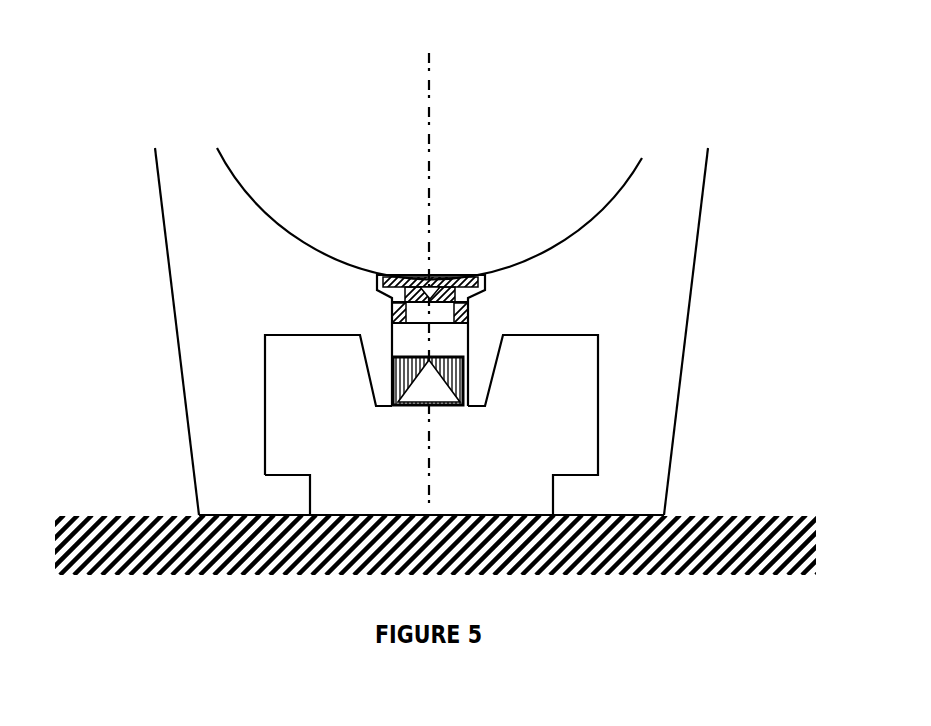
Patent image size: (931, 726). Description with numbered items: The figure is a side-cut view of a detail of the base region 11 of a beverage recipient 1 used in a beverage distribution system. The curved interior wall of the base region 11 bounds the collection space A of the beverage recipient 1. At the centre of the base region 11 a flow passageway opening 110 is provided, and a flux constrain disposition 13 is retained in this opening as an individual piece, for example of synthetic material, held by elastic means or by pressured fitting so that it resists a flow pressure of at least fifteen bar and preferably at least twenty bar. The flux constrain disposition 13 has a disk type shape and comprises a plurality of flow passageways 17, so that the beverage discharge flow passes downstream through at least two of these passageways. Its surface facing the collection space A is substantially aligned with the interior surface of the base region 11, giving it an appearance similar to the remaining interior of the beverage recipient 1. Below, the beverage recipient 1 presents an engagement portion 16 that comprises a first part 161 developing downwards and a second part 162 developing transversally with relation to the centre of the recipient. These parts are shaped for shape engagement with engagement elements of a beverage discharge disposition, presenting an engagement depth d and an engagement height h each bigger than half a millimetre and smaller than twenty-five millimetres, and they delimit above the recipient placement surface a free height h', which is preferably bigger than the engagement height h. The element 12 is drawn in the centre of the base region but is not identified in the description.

The beverage recipient 1 is at (413, 290).
The collection space A is at (525, 121).
The base region 11 is at (429, 219).
The sensor element 12 is at (429, 370).
The flux constrain disposition 13 is at (434, 329).
The engagement portion 16 is at (395, 469).
The flow passageways 17 is at (434, 292).
The flow passageway opening 110 is at (449, 315).
The first part 161 is at (294, 405).
The second part 162 is at (284, 495).
The engagement depth d is at (353, 467).
The engagement height h is at (549, 507).
The free height h' is at (462, 461).